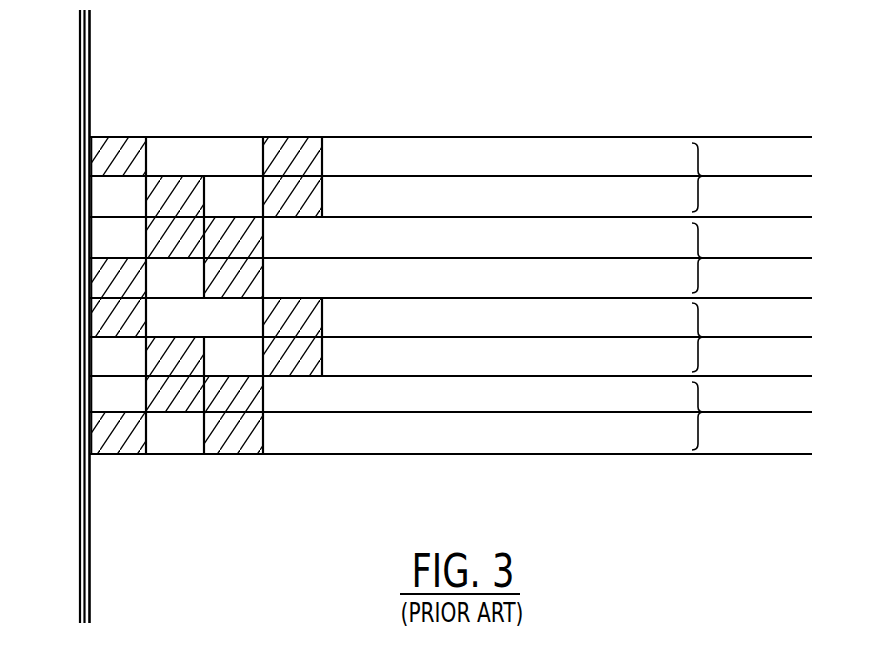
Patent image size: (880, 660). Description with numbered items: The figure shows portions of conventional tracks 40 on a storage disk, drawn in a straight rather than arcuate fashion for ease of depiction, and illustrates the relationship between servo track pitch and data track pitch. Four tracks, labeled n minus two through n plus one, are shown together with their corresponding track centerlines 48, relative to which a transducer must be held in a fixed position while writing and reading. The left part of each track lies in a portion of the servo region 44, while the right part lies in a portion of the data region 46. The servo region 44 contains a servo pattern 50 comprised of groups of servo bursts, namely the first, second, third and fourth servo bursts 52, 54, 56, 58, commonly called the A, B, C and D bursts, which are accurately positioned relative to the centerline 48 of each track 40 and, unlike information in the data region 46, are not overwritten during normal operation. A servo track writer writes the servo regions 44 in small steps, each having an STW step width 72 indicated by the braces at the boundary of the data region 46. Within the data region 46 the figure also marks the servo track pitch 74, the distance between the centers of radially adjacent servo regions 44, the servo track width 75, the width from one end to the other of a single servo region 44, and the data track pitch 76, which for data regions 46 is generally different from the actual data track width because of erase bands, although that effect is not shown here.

The track 40 is at (819, 143).
The servo region 44 is at (98, 465).
The data region 46 is at (325, 465).
The track centerline 48 is at (74, 176).
The servo pattern 50 is at (316, 74).
The first servo burst 52 is at (118, 263).
The second servo burst 54 is at (175, 242).
The third servo burst 56 is at (233, 263).
The fourth servo burst 58 is at (292, 224).
The STW step width 72 is at (341, 142).
The servo track pitch 74 is at (404, 256).
The servo track width 75 is at (490, 296).
The data track pitch 76 is at (560, 256).